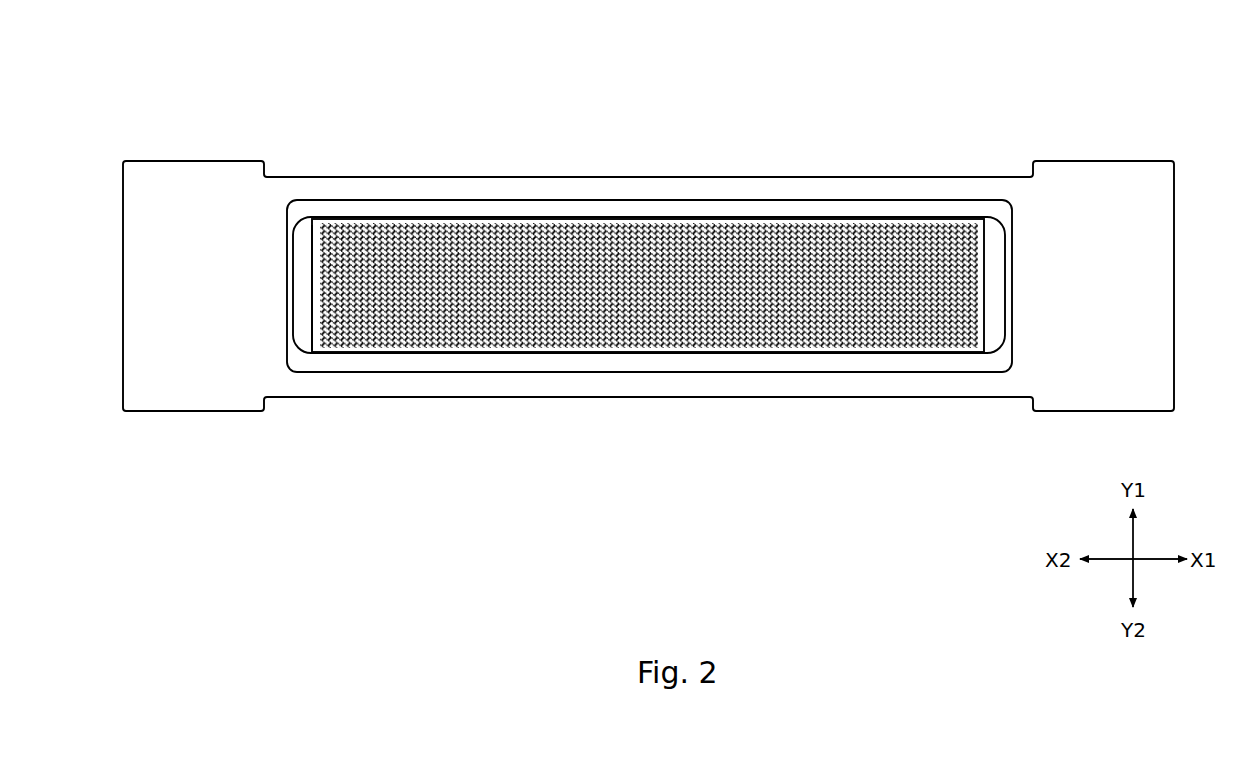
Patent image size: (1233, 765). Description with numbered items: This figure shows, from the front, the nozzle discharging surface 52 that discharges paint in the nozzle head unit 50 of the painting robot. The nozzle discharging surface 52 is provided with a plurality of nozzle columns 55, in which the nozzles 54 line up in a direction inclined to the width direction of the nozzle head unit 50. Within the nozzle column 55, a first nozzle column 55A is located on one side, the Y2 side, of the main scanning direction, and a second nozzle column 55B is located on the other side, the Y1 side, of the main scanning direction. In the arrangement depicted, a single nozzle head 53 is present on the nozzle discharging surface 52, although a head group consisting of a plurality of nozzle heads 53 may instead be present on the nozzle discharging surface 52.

The nozzle head unit 50 is at (674, 140).
The nozzle discharging surface 52 is at (923, 392).
The nozzle head 53 is at (318, 348).
The nozzle 54 is at (631, 347).
The nozzle column 55 is at (978, 248).
The first nozzle column 55A is at (320, 322).
The second nozzle column 55B is at (313, 262).